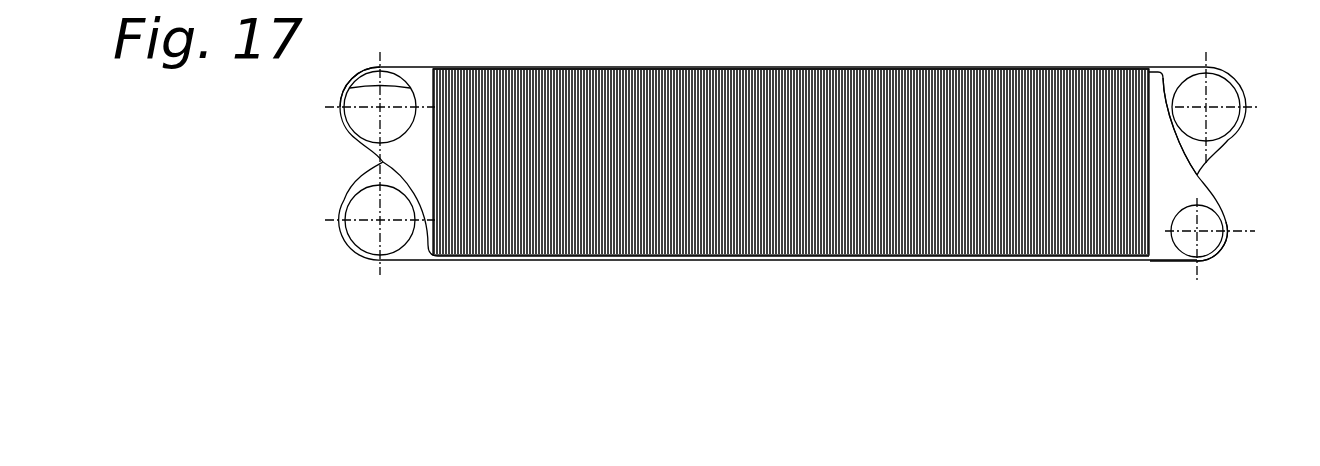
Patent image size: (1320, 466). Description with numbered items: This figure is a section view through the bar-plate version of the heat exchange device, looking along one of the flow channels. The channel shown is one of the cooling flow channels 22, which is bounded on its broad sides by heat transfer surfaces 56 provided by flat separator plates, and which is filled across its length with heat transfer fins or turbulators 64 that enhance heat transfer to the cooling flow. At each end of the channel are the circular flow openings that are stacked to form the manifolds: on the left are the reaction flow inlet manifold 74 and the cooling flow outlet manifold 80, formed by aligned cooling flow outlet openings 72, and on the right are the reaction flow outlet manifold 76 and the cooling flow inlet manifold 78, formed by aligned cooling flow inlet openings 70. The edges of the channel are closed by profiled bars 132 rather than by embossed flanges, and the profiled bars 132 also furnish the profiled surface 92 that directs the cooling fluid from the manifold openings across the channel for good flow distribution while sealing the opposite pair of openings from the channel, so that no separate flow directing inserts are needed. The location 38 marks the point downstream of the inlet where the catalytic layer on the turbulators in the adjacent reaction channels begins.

The location 38 is at (792, 131).
The profiled bars 132 is at (423, 61).
The cooling flow channels 22 is at (995, 256).
The turbulators 64 is at (726, 63).
The cooling flow outlet opening 72 is at (351, 87).
The reaction flow inlet manifold 74 is at (368, 232).
The reaction flow outlet manifold 76 is at (1216, 103).
The cooling flow inlet manifold 78 is at (1213, 220).
The cooling flow outlet manifold 80 is at (362, 98).
The profiled surface 92 is at (395, 180).
The heat transfer surfaces 56 is at (1177, 192).
The cooling flow inlet opening 70 is at (1183, 253).